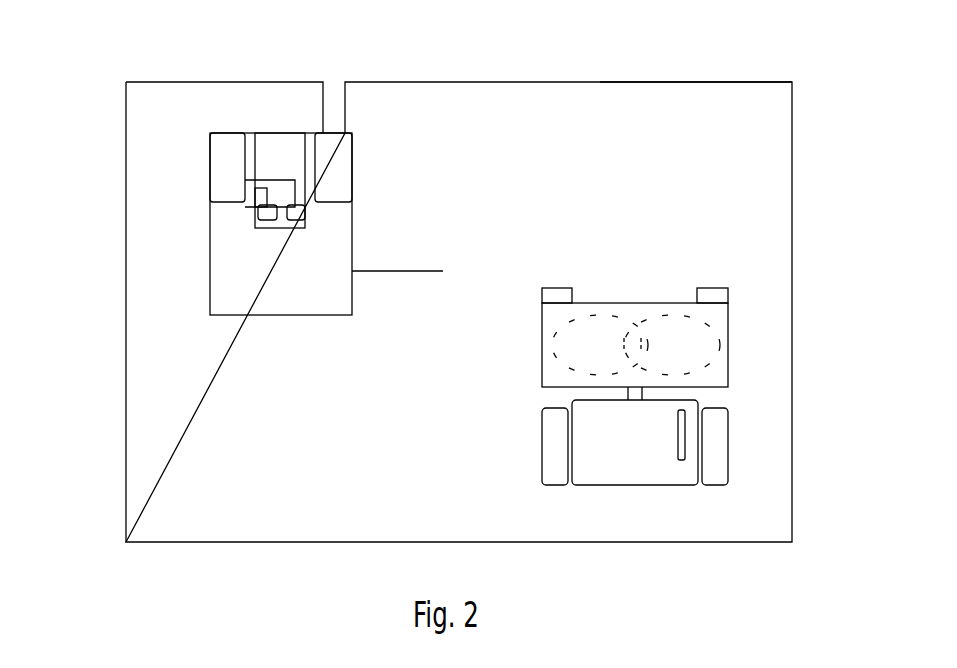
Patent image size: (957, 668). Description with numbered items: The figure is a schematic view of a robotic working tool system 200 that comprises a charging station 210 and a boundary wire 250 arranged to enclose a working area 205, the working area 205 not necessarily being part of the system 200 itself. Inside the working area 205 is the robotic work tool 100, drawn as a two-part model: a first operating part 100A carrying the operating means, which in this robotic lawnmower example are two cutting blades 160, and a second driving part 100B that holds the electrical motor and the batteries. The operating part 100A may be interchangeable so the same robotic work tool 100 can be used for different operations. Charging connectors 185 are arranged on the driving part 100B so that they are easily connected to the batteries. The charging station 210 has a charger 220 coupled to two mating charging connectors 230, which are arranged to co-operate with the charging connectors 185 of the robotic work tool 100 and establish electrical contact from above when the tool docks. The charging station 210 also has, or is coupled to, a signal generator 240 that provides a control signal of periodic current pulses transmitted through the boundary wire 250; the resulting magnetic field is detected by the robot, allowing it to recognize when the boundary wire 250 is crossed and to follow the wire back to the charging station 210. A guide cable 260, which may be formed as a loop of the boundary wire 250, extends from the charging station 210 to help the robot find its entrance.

The robotic work tool 100 is at (744, 282).
The first operating part 100A is at (540, 347).
The second driving part 100B is at (540, 407).
The cutting blades 160 is at (665, 303).
The charging connectors 185 is at (676, 422).
The robotic working tool system 200 is at (196, 124).
The working area 205 is at (694, 118).
The charging station 210 is at (208, 317).
The charger 220 is at (227, 145).
The mating charging connectors 230 is at (290, 224).
The signal generator 240 is at (356, 162).
The boundary wire 250 is at (762, 82).
The guide cable 260 is at (392, 272).